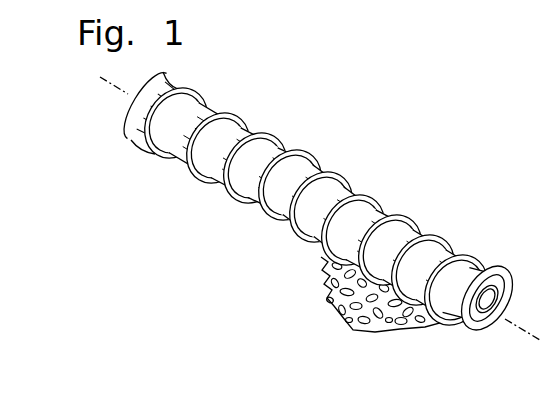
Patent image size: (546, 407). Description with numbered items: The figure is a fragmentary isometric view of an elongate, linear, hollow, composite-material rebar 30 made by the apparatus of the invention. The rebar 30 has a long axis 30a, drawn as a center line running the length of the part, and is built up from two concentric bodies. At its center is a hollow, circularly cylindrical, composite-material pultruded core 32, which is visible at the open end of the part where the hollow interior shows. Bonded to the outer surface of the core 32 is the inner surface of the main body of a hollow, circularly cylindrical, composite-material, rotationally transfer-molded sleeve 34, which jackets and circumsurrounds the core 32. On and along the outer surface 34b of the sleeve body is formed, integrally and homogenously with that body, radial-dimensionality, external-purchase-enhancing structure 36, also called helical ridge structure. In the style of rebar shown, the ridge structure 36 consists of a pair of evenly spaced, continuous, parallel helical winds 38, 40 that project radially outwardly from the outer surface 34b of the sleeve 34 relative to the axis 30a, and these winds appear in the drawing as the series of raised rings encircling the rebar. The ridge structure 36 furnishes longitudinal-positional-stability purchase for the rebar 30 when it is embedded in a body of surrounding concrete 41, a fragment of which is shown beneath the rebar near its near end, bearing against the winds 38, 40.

The rebar 30 is at (306, 216).
The long axis 30a is at (115, 96).
The core 32 is at (485, 319).
The sleeve 34 is at (173, 134).
The outer surface 34b is at (231, 187).
The external-purchase-enhancing structure 36 is at (298, 146).
The helical wind 38 is at (328, 173).
The helical wind 40 is at (366, 196).
The concrete 41 is at (348, 308).